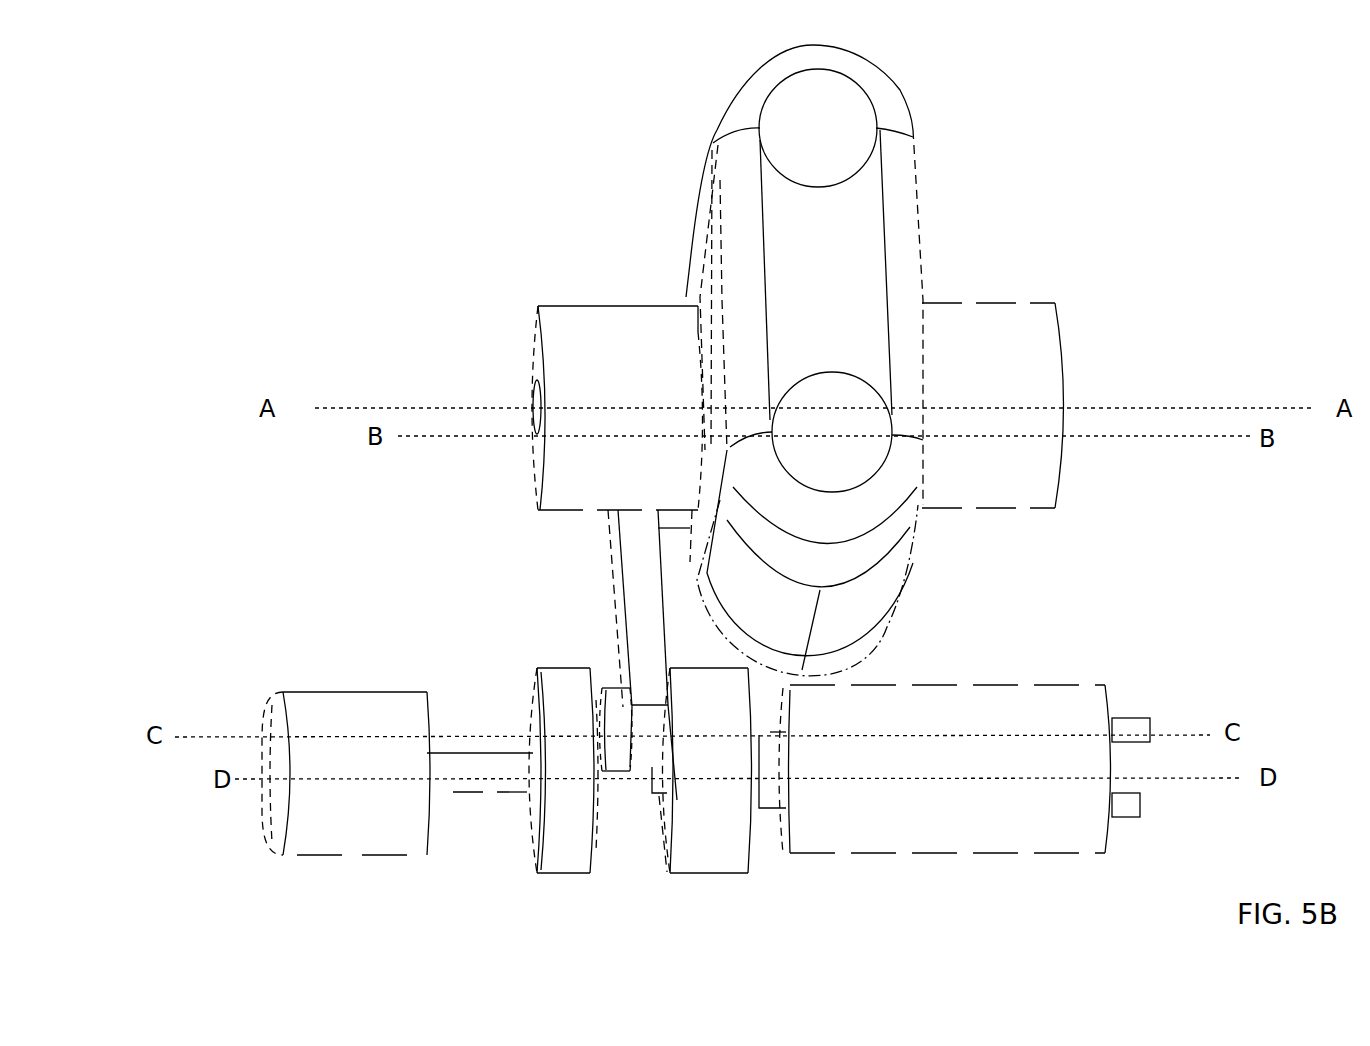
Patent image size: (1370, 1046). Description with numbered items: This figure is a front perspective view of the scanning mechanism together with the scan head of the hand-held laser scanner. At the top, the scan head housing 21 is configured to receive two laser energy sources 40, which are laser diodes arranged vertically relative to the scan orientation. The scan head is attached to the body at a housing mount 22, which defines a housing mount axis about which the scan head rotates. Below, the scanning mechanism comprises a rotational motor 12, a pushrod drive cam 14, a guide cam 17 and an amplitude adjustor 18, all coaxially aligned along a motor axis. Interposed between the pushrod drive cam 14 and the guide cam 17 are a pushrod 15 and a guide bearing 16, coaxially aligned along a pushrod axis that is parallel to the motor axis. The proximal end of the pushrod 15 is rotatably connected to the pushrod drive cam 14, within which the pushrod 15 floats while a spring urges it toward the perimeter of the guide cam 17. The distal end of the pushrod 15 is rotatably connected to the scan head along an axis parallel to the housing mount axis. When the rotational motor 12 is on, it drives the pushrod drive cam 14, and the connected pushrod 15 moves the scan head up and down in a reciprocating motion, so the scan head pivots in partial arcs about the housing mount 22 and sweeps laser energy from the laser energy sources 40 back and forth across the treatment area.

The rotational motor 12 is at (970, 837).
The pushrod drive cam 14 is at (735, 835).
The pushrod 15 is at (642, 615).
The guide bearing 16 is at (613, 692).
The guide cam 17 is at (567, 850).
The amplitude adjustor 18 is at (338, 850).
The scan head housing 21 is at (903, 90).
The housing mount 22 is at (1067, 332).
The laser energy source 40 is at (862, 145).